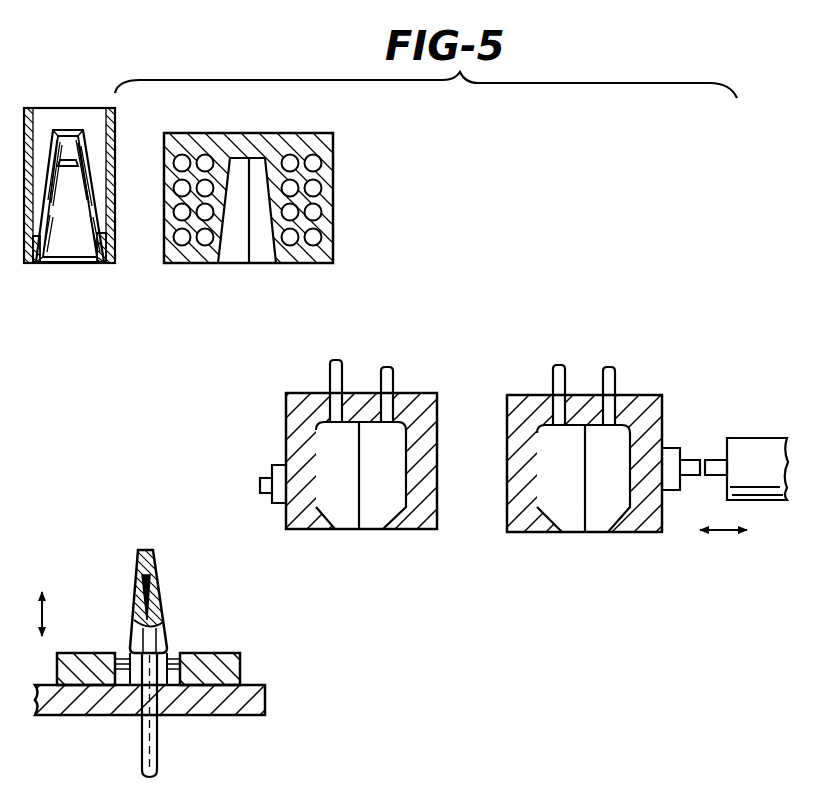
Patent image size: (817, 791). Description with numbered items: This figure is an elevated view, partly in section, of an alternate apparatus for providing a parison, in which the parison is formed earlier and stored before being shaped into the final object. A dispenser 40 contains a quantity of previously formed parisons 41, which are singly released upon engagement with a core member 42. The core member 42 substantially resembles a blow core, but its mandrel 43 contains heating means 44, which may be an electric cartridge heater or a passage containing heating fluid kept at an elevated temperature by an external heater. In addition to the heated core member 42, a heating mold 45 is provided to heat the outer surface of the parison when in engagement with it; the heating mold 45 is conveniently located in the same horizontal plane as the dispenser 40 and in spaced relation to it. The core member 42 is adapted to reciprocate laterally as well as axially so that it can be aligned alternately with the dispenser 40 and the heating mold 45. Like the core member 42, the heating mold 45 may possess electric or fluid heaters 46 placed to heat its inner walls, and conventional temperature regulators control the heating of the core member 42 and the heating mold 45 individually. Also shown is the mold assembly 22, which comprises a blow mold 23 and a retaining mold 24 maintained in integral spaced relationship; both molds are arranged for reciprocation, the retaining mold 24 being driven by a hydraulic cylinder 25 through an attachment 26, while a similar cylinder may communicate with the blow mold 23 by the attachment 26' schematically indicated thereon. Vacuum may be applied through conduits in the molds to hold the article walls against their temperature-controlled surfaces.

The mold assembly 22 is at (496, 345).
The blow mold 23 is at (411, 393).
The retaining mold 24 is at (641, 395).
The hydraulic cylinder 25 is at (742, 437).
The attachment 26 is at (694, 452).
The attachment 26' is at (257, 463).
The dispenser 40 is at (56, 118).
The previously formed parisons 41 is at (105, 265).
The core member 42 is at (144, 548).
The mandrel 43 is at (160, 636).
The heating means 44 is at (151, 588).
The heating mold 45 is at (337, 222).
The heaters 46 is at (292, 158).